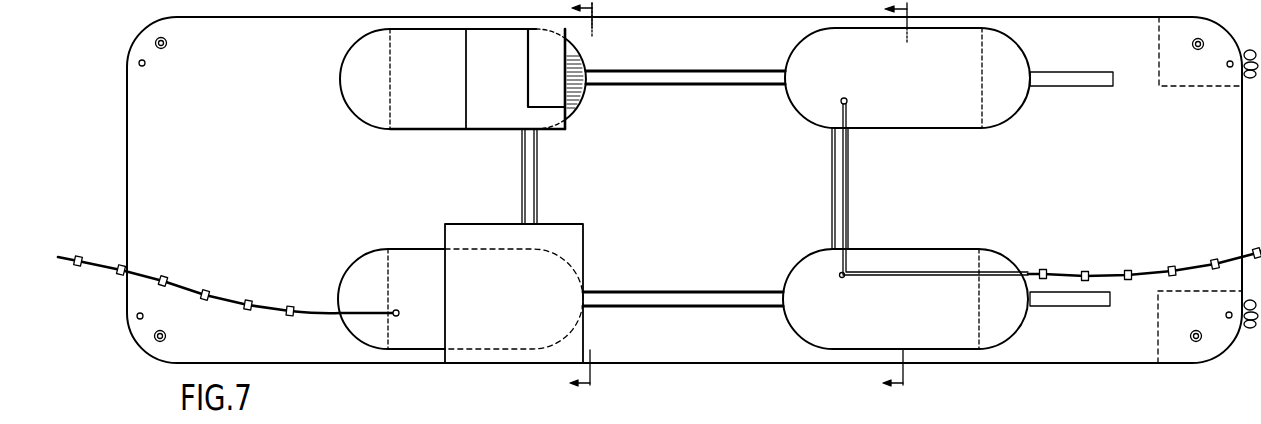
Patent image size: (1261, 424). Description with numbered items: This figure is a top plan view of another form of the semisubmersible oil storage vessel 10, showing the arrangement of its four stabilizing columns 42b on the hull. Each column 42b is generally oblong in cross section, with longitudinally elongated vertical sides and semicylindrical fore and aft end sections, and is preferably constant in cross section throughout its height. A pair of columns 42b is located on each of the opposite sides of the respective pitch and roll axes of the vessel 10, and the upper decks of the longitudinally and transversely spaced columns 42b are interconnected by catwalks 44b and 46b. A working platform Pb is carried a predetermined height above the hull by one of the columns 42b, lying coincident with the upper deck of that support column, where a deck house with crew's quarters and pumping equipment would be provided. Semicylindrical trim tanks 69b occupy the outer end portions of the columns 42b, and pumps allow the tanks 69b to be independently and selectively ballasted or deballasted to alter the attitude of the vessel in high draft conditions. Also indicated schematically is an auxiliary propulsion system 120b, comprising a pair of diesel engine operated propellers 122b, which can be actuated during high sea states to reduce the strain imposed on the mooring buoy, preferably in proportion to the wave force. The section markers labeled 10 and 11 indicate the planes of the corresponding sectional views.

The stabilizing column 42b is at (398, 128).
The semicylindrical trim tank 69b is at (355, 62).
The working platform Pb is at (477, 122).
The catwalk 44b is at (848, 188).
The catwalk 46b is at (537, 187).
The auxiliary propulsion system 120b is at (1208, 88).
The propeller 122b is at (1240, 70).
The vessel 10 is at (905, 197).
The section line 11 is at (590, 197).